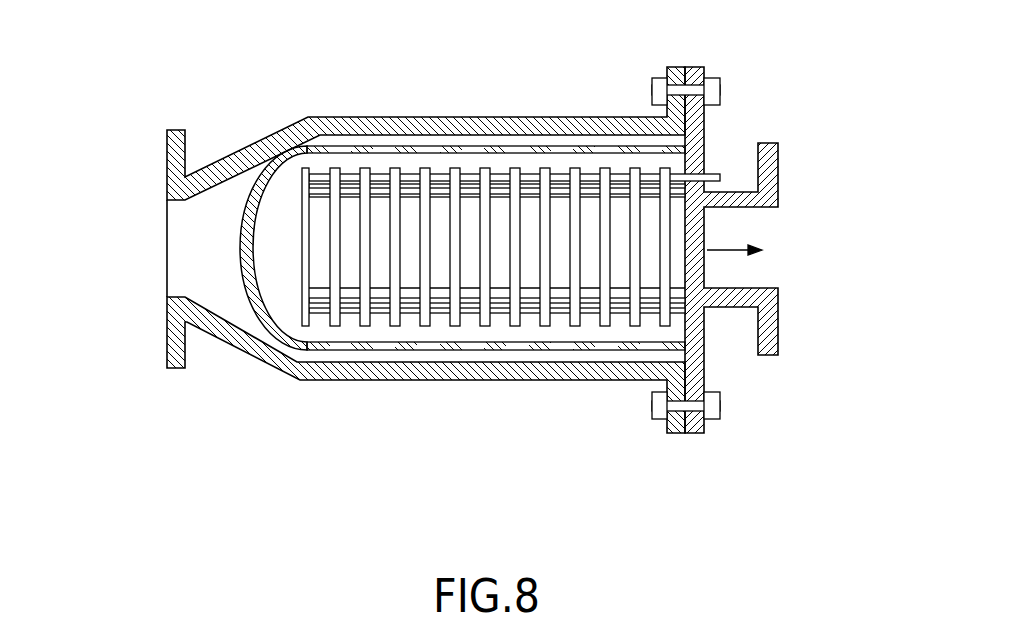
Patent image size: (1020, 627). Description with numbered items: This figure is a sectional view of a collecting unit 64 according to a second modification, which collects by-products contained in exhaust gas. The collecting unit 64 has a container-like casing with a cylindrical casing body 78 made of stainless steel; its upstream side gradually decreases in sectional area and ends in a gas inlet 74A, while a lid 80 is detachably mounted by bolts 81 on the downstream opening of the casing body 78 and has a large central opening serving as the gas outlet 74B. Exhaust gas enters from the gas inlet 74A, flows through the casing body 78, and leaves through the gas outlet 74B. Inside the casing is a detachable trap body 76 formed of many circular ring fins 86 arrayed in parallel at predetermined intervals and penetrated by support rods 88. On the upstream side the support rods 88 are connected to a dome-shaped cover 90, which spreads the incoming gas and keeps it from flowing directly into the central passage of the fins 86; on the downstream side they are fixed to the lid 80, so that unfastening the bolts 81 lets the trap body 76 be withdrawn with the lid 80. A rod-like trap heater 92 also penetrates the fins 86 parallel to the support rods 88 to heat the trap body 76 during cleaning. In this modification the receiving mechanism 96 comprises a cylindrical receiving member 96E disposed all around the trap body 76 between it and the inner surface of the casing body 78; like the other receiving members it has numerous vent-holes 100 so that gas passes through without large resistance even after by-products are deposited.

The collecting unit 64 is at (673, 535).
The gas inlet 74A is at (167, 247).
The gas outlet 74B is at (778, 242).
The trap body 76 is at (537, 241).
The casing body 78 is at (492, 117).
The lid 80 is at (722, 178).
The bolts 81 is at (710, 83).
The fins 86 is at (363, 327).
The support rods 88 is at (350, 188).
The cover 90 is at (298, 358).
The trap heater 92 is at (322, 172).
The receiving mechanism 96 is at (496, 314).
The cylindrical receiving member 96E is at (452, 350).
The vent-holes 100 is at (425, 362).